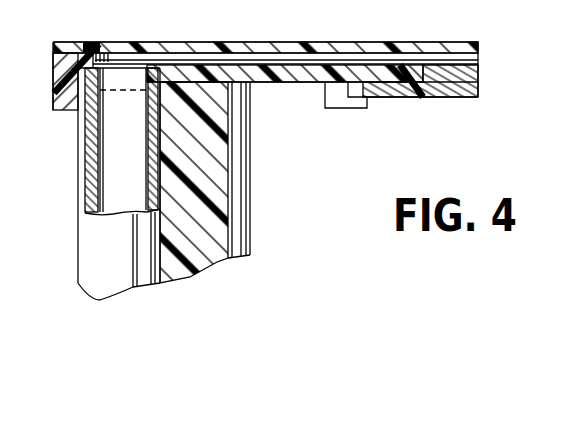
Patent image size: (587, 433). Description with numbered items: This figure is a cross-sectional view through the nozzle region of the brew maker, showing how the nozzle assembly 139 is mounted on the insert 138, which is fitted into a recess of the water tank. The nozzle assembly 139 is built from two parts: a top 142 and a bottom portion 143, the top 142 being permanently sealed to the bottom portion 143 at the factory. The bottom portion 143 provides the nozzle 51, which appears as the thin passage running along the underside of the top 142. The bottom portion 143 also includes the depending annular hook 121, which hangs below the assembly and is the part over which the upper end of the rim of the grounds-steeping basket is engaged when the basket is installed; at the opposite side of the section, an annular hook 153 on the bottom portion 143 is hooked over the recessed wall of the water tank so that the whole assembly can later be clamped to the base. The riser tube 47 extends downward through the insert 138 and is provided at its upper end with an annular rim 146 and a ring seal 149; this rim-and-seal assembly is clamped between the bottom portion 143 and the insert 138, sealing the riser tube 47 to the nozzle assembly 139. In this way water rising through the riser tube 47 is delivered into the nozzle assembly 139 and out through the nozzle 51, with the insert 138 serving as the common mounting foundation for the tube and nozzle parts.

The nozzle assembly 139 is at (270, 36).
The top 142 is at (418, 42).
The nozzle 51 is at (447, 59).
The bottom portion 143 is at (303, 85).
The annular hook 121 is at (323, 102).
The annular hook 153 is at (63, 111).
The annular rim 146 is at (88, 42).
The ring seal 149 is at (164, 78).
The riser tube 47 is at (87, 173).
The insert 138 is at (240, 239).